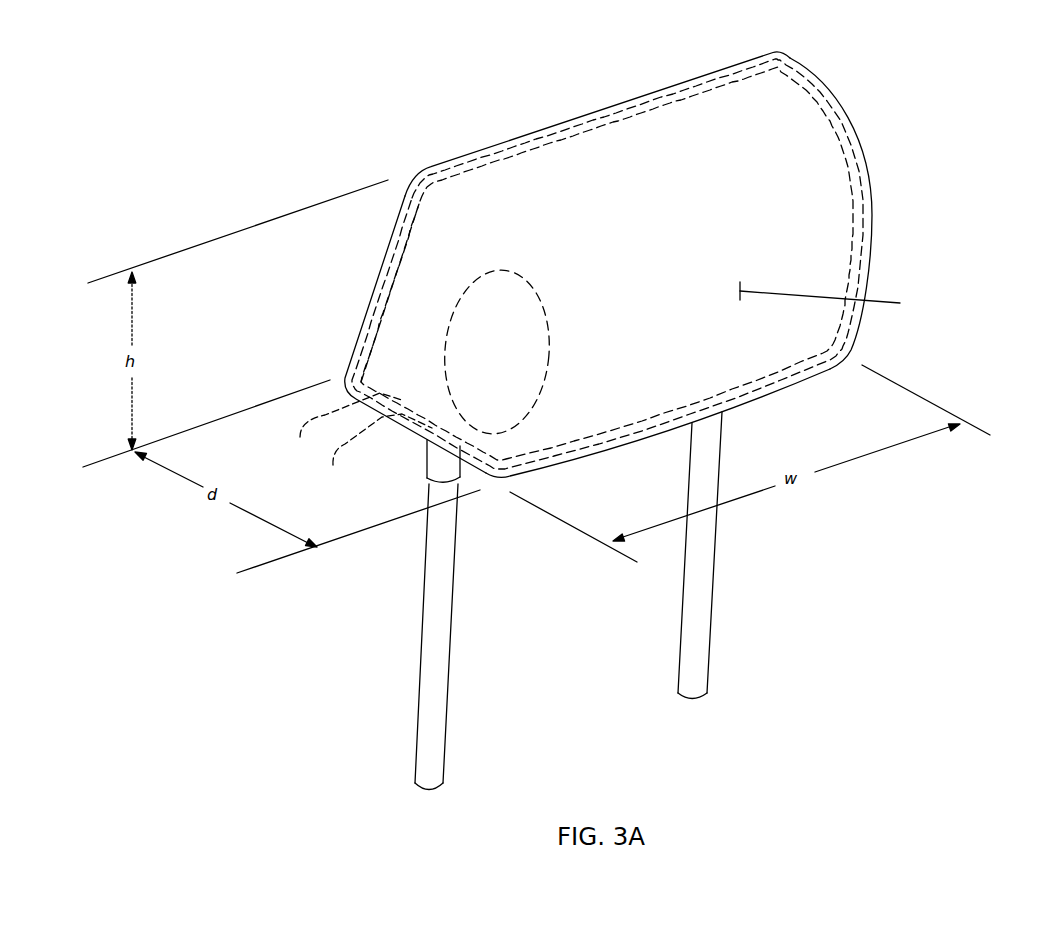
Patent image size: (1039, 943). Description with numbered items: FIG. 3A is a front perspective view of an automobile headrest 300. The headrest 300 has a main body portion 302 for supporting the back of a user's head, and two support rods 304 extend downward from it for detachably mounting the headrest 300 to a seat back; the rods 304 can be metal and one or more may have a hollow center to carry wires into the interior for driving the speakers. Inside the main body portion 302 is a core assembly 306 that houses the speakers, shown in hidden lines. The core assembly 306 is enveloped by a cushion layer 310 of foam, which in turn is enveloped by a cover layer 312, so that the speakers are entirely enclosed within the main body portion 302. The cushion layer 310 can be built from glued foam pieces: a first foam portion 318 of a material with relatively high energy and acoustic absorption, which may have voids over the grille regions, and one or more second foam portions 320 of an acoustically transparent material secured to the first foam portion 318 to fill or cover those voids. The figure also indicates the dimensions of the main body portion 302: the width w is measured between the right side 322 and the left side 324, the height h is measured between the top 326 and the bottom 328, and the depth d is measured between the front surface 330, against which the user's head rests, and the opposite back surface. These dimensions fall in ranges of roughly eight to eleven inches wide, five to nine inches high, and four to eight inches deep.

The automobile headrest 300 is at (130, 105).
The main body portion 302 is at (852, 96).
The support rods 304 is at (410, 648).
The core assembly 306 is at (304, 438).
The cushion layer 310 is at (337, 464).
The cover layer 312 is at (358, 316).
The first foam portion 318 is at (864, 146).
The second foam portion 320 is at (856, 192).
The right side 322 is at (398, 284).
The left side 324 is at (878, 249).
The top 326 is at (558, 108).
The bottom 328 is at (654, 447).
The front surface 330 is at (900, 303).